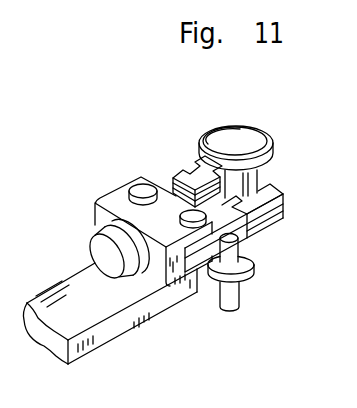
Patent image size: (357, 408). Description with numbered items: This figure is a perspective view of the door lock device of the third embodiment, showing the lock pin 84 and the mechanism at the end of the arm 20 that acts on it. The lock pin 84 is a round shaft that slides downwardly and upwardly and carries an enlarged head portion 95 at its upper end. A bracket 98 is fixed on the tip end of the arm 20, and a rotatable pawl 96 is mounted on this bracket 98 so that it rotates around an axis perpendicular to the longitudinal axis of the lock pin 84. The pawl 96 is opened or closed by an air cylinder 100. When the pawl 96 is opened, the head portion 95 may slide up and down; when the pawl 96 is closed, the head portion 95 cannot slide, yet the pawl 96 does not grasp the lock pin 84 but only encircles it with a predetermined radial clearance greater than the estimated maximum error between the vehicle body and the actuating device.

The arm 20 is at (60, 300).
The lock pin 84 is at (233, 251).
The head portion 95 is at (262, 147).
The pawl 96 is at (200, 167).
The bracket 98 is at (120, 197).
The air cylinder 100 is at (98, 250).